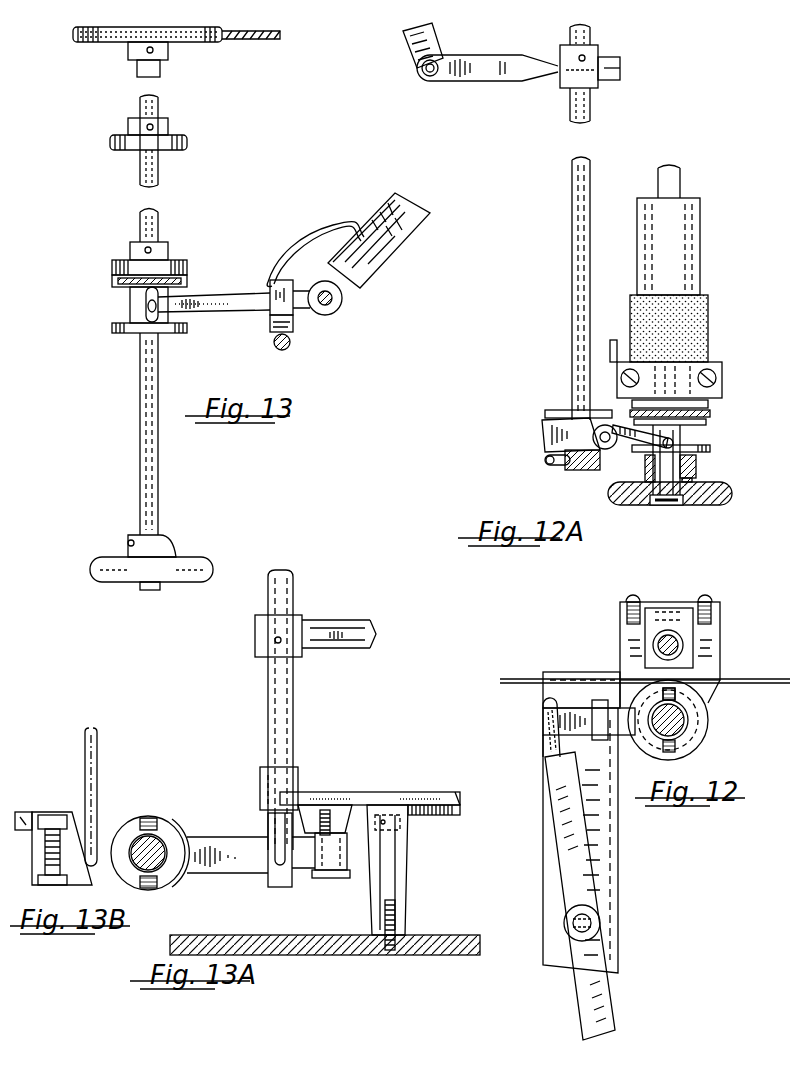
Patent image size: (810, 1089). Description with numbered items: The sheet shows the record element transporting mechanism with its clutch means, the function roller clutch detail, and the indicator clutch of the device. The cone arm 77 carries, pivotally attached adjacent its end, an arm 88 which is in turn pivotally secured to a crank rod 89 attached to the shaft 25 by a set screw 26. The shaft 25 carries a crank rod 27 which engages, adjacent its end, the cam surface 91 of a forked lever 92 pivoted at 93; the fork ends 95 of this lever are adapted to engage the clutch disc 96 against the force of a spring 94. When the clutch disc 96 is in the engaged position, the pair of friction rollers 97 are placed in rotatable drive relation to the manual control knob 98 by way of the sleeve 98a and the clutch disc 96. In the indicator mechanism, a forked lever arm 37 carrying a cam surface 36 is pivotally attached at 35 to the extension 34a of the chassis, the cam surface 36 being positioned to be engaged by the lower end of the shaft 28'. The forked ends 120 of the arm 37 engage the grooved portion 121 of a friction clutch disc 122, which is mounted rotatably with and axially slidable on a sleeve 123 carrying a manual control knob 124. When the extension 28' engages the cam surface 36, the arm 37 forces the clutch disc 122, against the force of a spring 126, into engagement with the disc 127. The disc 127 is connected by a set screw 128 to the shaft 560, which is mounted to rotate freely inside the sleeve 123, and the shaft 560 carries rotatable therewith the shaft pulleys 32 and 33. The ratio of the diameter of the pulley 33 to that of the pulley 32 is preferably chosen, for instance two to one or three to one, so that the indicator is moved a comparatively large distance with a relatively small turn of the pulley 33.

In FIG. 12A, the shaft 25 is at (583, 332).
In FIG. 12, the shaft 25 is at (600, 923).
In FIG. 12A, the set screw 26 is at (588, 58).
In FIG. 12A, the crank rod 27 is at (550, 464).
In FIG. 12, the crank rod 27 is at (577, 846).
In FIG. 13, the shaft 28' is at (303, 347).
In FIG. 13A, the shaft 28' is at (300, 710).
In FIG. 13B, the shaft 28' is at (114, 797).
In FIG. 13, the shaft pulley 32 is at (185, 141).
In FIG. 13, the shaft pulley 33 is at (113, 43).
In FIG. 13A, the extension of chassis 34a is at (352, 803).
In FIG. 13, the pivot 35 is at (333, 299).
In FIG. 13A, the pivot 35 is at (334, 879).
In FIG. 13, the cam surface 36 is at (271, 325).
In FIG. 13A, the cam surface 36 is at (276, 881).
In FIG. 13B, the cam surface 36 is at (79, 816).
In FIG. 13, the forked lever arm 37 is at (248, 298).
In FIG. 13B, the forked lever arm 37 is at (226, 849).
In FIG. 12A, the cone arm 77 is at (406, 45).
In FIG. 12A, the arm 88 is at (501, 73).
In FIG. 12A, the crank rod 89 is at (598, 86).
In FIG. 12, the crank rod 89 is at (604, 1012).
In FIG. 12A, the cam surface 91 is at (586, 468).
In FIG. 12, the cam surface 91 is at (562, 711).
In FIG. 12, the forked lever 92 is at (626, 738).
In FIG. 12A, the pivot 93 is at (598, 437).
In FIG. 12, the pivot 93 is at (600, 692).
In FIG. 12A, the spring 94 is at (698, 463).
In FIG. 12A, the fork ends 95 is at (628, 437).
In FIG. 12, the fork ends 95 is at (652, 706).
In FIG. 12A, the clutch disc 96 is at (712, 450).
In FIG. 12, the clutch disc 96 is at (707, 711).
In FIG. 12A, the friction rollers 97 is at (702, 343).
In FIG. 12A, the manual control knob 98 is at (712, 506).
In FIG. 12A, the sleeve 98a is at (690, 476).
In FIG. 13, the forked ends 120 is at (148, 308).
In FIG. 13B, the forked ends 120 is at (165, 831).
In FIG. 13, the grooved portion 121 is at (142, 298).
In FIG. 13, the friction clutch disc 122 is at (113, 279).
In FIG. 13, the sleeve 123 is at (145, 373).
In FIG. 13, the manual control knob 124 is at (191, 577).
In FIG. 13, the spring 126 is at (320, 229).
In FIG. 13, the disc 127 is at (115, 262).
In FIG. 13, the set screw 128 is at (151, 249).
In FIG. 13, the shaft 560 is at (156, 220).